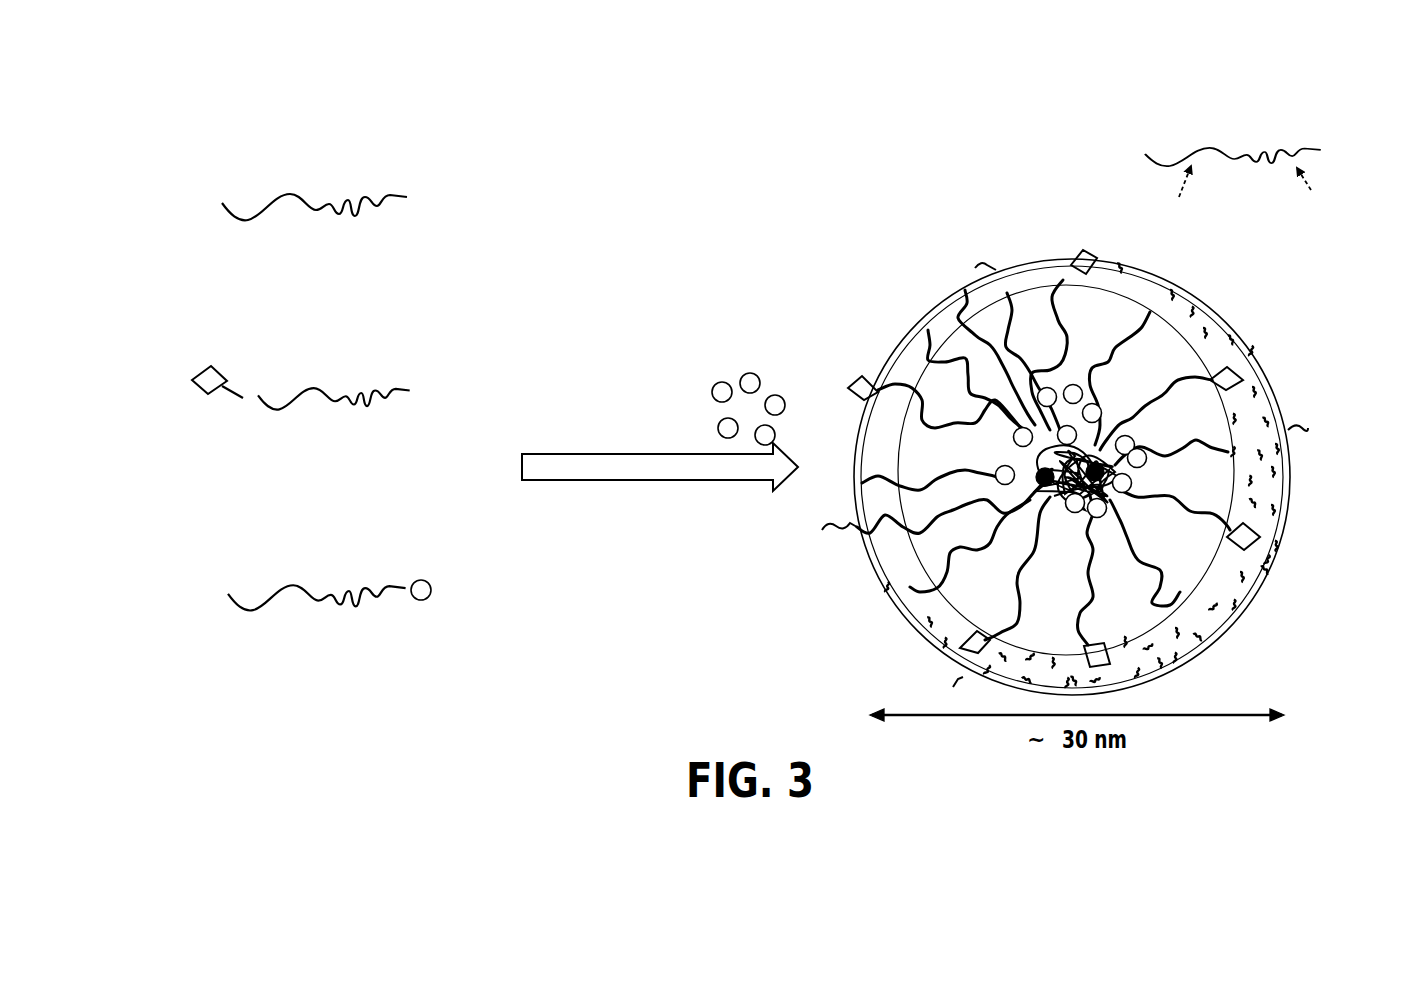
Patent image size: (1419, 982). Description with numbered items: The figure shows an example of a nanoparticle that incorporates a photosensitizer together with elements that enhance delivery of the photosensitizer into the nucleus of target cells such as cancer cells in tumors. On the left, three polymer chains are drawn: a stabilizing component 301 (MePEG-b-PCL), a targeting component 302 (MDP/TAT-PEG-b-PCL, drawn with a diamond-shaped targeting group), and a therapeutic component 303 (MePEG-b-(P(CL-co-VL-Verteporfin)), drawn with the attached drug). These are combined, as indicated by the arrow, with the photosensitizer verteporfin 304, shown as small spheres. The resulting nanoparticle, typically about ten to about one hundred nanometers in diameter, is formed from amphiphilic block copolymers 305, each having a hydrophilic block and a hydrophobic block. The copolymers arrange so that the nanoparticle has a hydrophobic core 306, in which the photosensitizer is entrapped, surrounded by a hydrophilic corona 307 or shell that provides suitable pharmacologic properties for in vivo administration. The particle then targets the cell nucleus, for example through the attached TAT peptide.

The stabilizing component 301 is at (468, 220).
The targeting component 302 is at (177, 408).
The therapeutic component 303 is at (508, 612).
The photosensitizer verteporfin 304 is at (703, 373).
The amphiphilic block copolymer 305 is at (1142, 125).
The hydrophobic core 306 is at (1015, 543).
The hydrophilic corona 307 is at (1188, 594).